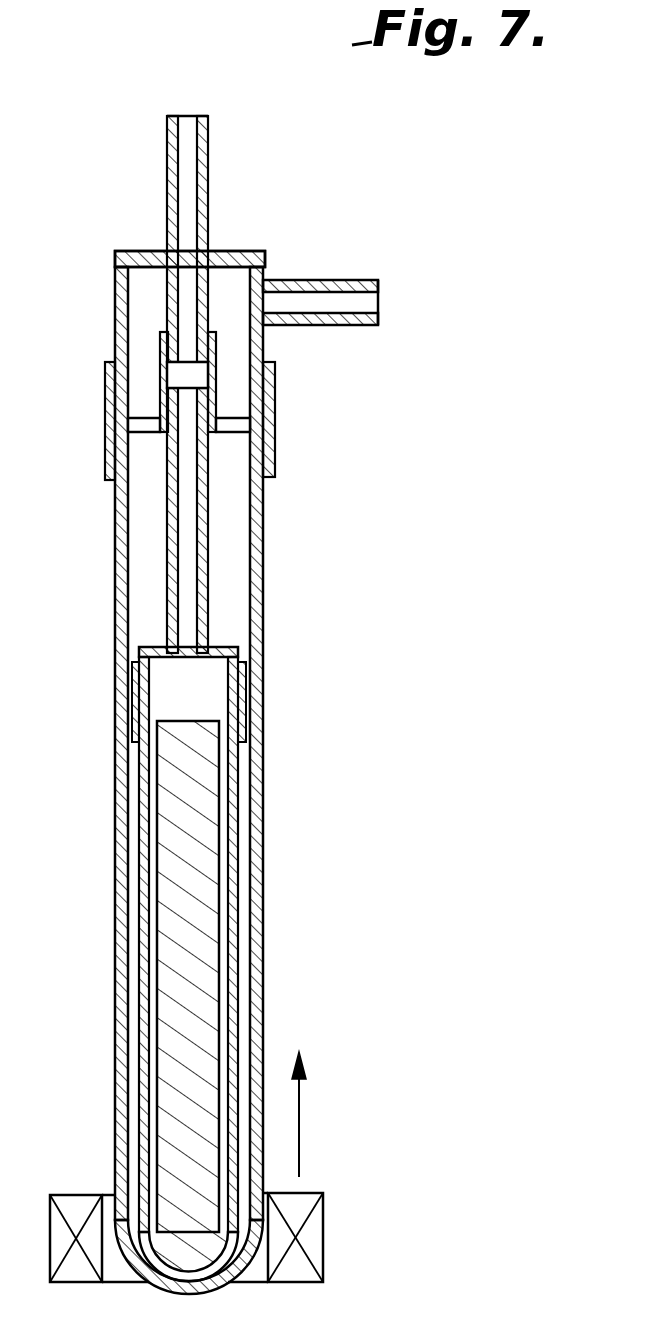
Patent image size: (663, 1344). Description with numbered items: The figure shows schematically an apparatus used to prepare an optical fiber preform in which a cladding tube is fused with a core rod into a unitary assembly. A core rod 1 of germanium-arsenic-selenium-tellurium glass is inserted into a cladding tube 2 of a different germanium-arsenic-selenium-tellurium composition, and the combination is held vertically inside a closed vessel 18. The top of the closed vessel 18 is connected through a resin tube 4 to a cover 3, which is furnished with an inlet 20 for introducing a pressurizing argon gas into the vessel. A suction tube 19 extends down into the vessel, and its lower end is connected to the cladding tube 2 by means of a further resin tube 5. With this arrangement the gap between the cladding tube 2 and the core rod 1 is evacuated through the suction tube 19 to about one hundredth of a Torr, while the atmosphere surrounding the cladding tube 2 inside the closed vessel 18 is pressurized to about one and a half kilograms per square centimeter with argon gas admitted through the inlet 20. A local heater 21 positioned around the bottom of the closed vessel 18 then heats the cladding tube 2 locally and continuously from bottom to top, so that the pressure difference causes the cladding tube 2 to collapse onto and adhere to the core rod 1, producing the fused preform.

The core rod 1 is at (200, 720).
The cladding tube 2 is at (237, 787).
The cover 3 is at (262, 250).
The resin tube 4 is at (273, 410).
The resin tube 5 is at (162, 342).
The closed vessel 18 is at (263, 538).
The suction tube 19 is at (209, 160).
The inlet 20 is at (357, 280).
The local heater 21 is at (307, 1225).